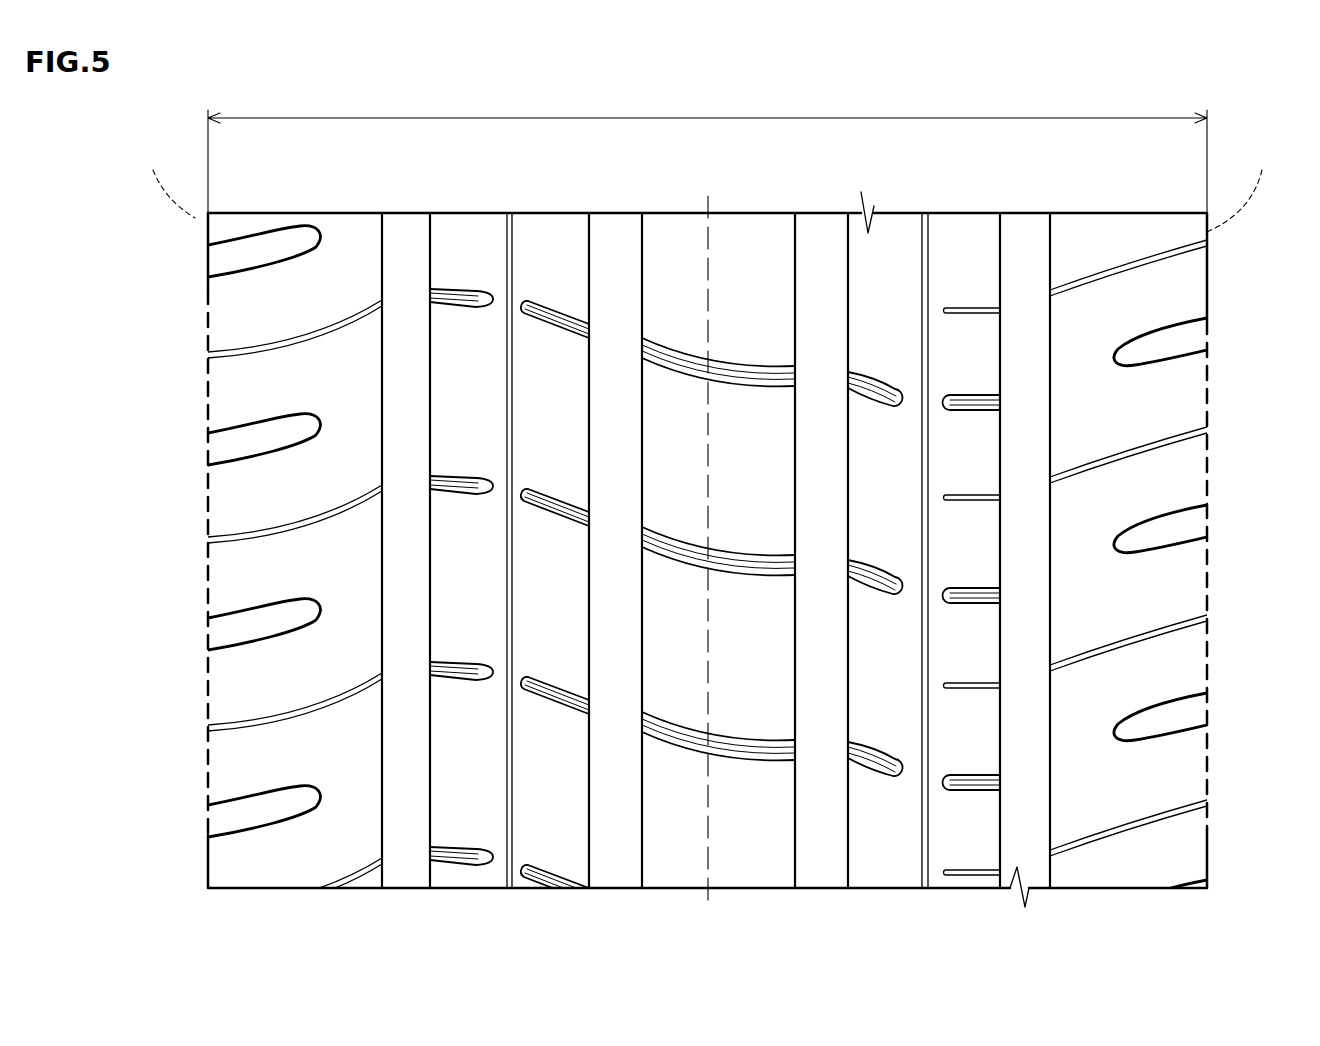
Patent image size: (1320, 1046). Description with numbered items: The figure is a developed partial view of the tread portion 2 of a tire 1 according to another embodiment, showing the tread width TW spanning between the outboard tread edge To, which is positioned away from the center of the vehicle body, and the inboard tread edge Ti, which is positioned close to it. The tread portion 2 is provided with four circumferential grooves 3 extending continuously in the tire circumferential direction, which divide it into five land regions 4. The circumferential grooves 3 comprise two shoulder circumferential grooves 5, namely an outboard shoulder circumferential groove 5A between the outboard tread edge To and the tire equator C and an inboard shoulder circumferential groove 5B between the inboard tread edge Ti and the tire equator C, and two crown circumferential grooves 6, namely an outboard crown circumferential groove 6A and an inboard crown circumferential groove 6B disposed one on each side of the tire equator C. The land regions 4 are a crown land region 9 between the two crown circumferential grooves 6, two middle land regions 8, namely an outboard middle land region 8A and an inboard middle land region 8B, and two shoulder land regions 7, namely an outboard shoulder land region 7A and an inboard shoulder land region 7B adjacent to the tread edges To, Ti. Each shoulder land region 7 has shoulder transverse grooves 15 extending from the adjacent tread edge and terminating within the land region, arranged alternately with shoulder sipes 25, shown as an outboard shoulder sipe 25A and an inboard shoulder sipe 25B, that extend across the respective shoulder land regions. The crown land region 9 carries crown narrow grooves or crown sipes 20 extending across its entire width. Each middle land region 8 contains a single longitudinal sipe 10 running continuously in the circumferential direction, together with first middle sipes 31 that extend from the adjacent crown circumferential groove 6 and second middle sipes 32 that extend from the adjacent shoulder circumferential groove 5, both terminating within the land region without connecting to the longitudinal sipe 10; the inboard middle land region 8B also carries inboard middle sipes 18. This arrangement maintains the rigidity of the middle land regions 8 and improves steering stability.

The tire 1 is at (999, 207).
The tread portion 2 is at (440, 212).
The circumferential grooves 3 is at (613, 263).
The land regions 4 is at (742, 255).
The shoulder circumferential grooves 5 is at (407, 258).
The outboard shoulder circumferential groove 5A is at (408, 402).
The inboard shoulder circumferential groove 5B is at (1022, 403).
The crown circumferential grooves 6 is at (620, 233).
The outboard crown circumferential groove 6A is at (608, 392).
The inboard crown circumferential groove 6B is at (820, 367).
The shoulder land regions 7 is at (256, 295).
The outboard shoulder land region 7A is at (309, 290).
The inboard shoulder land region 7B is at (1098, 248).
The middle land regions 8 is at (463, 257).
The outboard middle land region 8A is at (542, 260).
The inboard middle land region 8B is at (953, 250).
The crown land region 9 is at (680, 252).
The longitudinal sipe 10 is at (508, 573).
The shoulder transverse grooves 15 is at (263, 625).
The inboard middle sipes 18 is at (973, 680).
The crown narrow grooves 20 is at (745, 745).
The shoulder sipes 25 is at (273, 525).
The shoulder sipe in the outboard shoulder land region 25A is at (263, 717).
The shoulder sipe in the inboard shoulder land region 25B is at (1133, 633).
The first middle sipes 31 is at (547, 508).
The second middle sipes 32 is at (460, 482).
The tire equator C is at (708, 532).
The tread width TW is at (707, 147).
The outboard tread edge To is at (164, 175).
The inboard tread edge Ti is at (1244, 182).